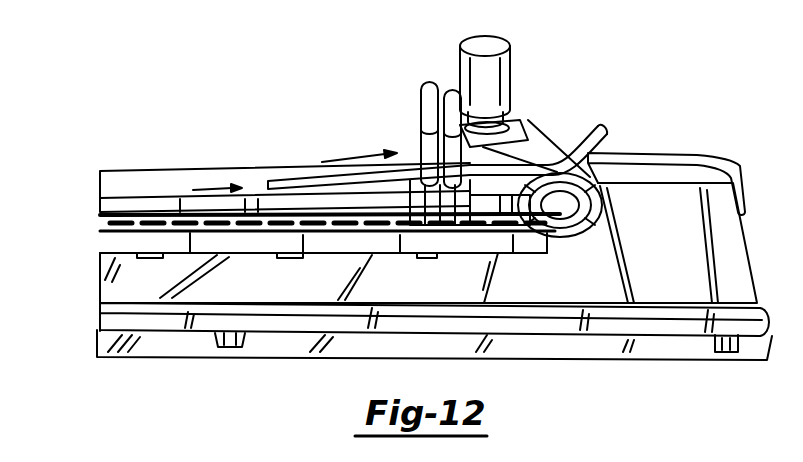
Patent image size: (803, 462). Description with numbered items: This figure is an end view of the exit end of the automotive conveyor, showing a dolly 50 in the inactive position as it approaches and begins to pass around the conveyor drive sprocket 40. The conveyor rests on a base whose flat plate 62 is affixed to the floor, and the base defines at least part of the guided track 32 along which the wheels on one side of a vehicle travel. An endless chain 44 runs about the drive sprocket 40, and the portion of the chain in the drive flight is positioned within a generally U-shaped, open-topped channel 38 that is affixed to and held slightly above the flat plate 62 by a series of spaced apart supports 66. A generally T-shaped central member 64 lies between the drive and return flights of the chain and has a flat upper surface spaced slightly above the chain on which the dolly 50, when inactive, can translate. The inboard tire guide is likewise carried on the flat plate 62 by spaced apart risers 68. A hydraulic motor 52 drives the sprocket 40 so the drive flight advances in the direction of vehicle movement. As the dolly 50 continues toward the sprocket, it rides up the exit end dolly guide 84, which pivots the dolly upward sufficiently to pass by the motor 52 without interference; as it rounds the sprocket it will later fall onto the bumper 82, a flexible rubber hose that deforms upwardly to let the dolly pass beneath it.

The guided track 32 is at (285, 297).
The channel 38 is at (100, 247).
The conveyor drive sprocket 40 is at (602, 228).
The chain 44 is at (116, 220).
The dolly 50 is at (413, 84).
The hydraulic motor 52 is at (512, 56).
The flat plate 62 is at (548, 340).
The central member 64 is at (143, 190).
The supports 66 is at (101, 311).
The risers 68 is at (735, 352).
The bumper 82 is at (649, 152).
The exit end dolly guide 84 is at (578, 118).